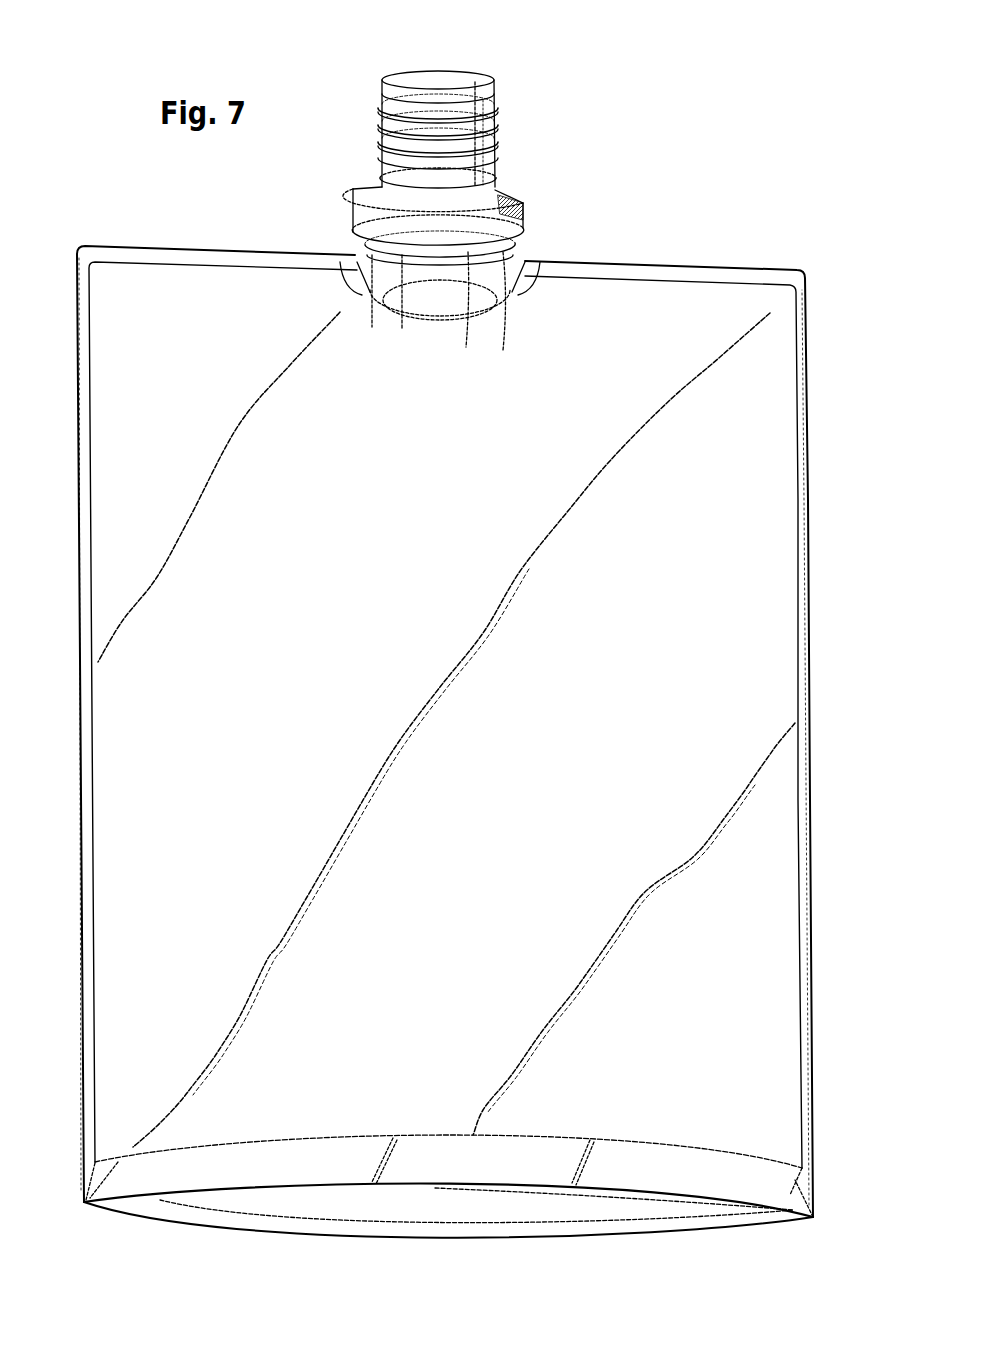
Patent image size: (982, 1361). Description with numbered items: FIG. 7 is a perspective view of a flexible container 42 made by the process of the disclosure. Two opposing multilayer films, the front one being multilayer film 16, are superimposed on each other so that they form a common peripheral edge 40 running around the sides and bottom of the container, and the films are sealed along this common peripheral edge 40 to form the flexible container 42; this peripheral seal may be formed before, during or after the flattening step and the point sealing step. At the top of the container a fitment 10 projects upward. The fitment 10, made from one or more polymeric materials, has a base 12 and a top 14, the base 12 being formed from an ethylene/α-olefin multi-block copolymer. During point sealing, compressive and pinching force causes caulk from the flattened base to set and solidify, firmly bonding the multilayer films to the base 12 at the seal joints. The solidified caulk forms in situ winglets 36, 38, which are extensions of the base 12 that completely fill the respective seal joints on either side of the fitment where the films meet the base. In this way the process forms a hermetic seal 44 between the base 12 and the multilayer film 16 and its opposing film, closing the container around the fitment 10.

The fitment 10 is at (558, 114).
The base 12 is at (520, 256).
The top 14 is at (403, 92).
The multilayer film 16 is at (172, 681).
The in situ winglet 36 is at (337, 293).
The in situ winglet 38 is at (552, 277).
The common peripheral edge 40 is at (658, 263).
The flexible container 42 is at (750, 202).
The hermetic seal 44 is at (308, 220).